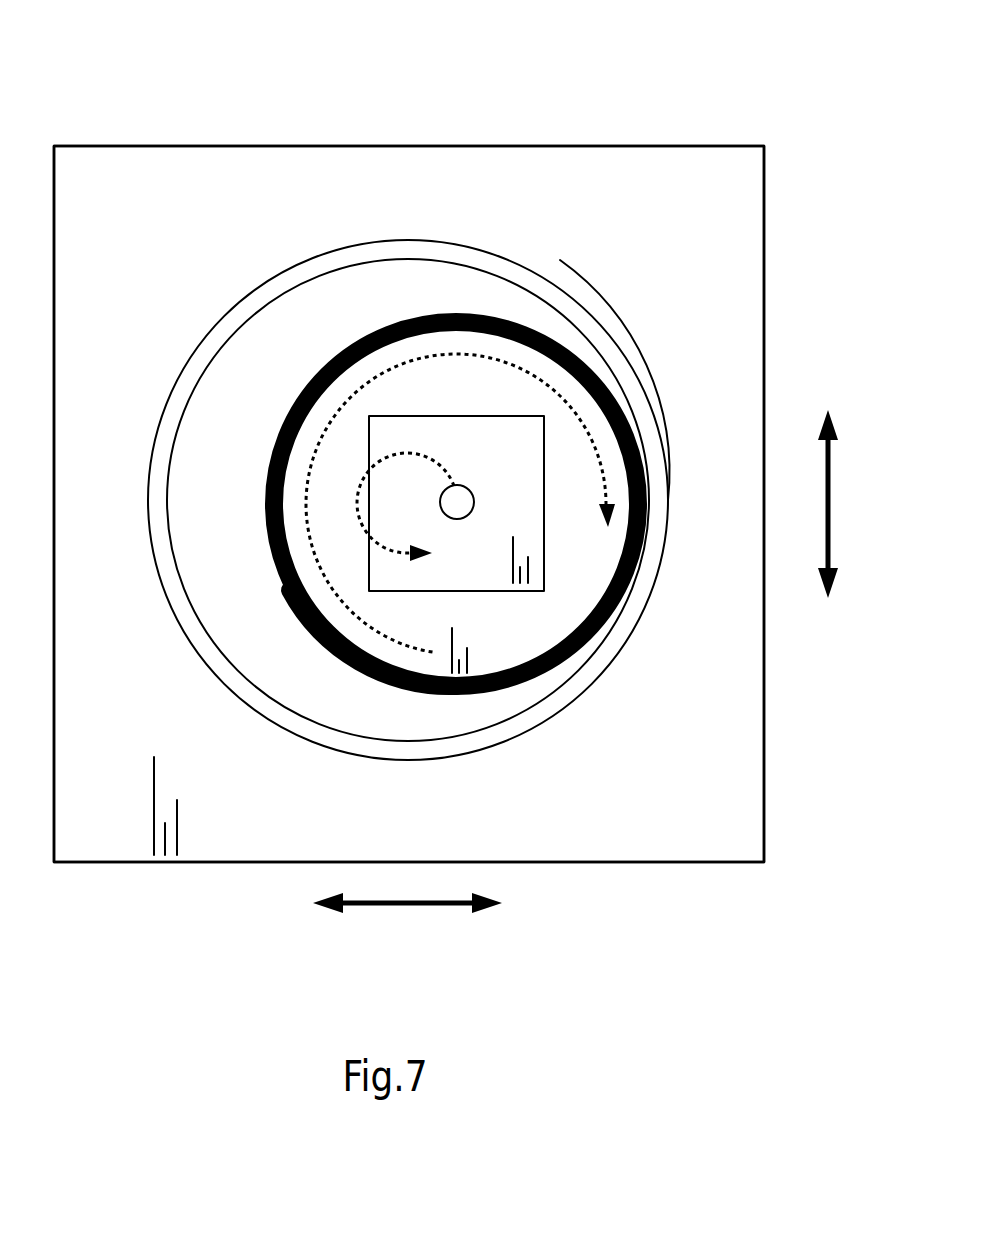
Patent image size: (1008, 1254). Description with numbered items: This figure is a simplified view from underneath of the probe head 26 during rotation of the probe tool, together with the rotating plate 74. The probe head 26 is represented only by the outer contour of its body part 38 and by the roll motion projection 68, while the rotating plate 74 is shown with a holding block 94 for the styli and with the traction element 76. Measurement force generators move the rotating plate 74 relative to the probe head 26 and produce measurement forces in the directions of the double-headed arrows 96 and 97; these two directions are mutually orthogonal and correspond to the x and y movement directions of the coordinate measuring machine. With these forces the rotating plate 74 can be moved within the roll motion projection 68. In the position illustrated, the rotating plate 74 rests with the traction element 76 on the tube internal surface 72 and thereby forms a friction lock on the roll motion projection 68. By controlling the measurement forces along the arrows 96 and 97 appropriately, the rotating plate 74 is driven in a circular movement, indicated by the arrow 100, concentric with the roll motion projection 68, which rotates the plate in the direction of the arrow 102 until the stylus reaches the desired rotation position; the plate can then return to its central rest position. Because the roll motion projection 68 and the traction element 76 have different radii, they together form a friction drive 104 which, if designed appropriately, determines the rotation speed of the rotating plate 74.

The probe head 26 is at (362, 146).
The body part 38 is at (680, 173).
The roll motion projection 68 is at (153, 491).
The tube internal surface 72 is at (184, 582).
The rotating plate 74 is at (525, 637).
The traction element 76 is at (325, 642).
The holding block 94 is at (526, 497).
The double-headed arrow 96 is at (407, 905).
The double-headed arrow 97 is at (833, 497).
The arrow 100 is at (407, 455).
The arrow 102 is at (440, 355).
The friction drive 104 is at (655, 292).